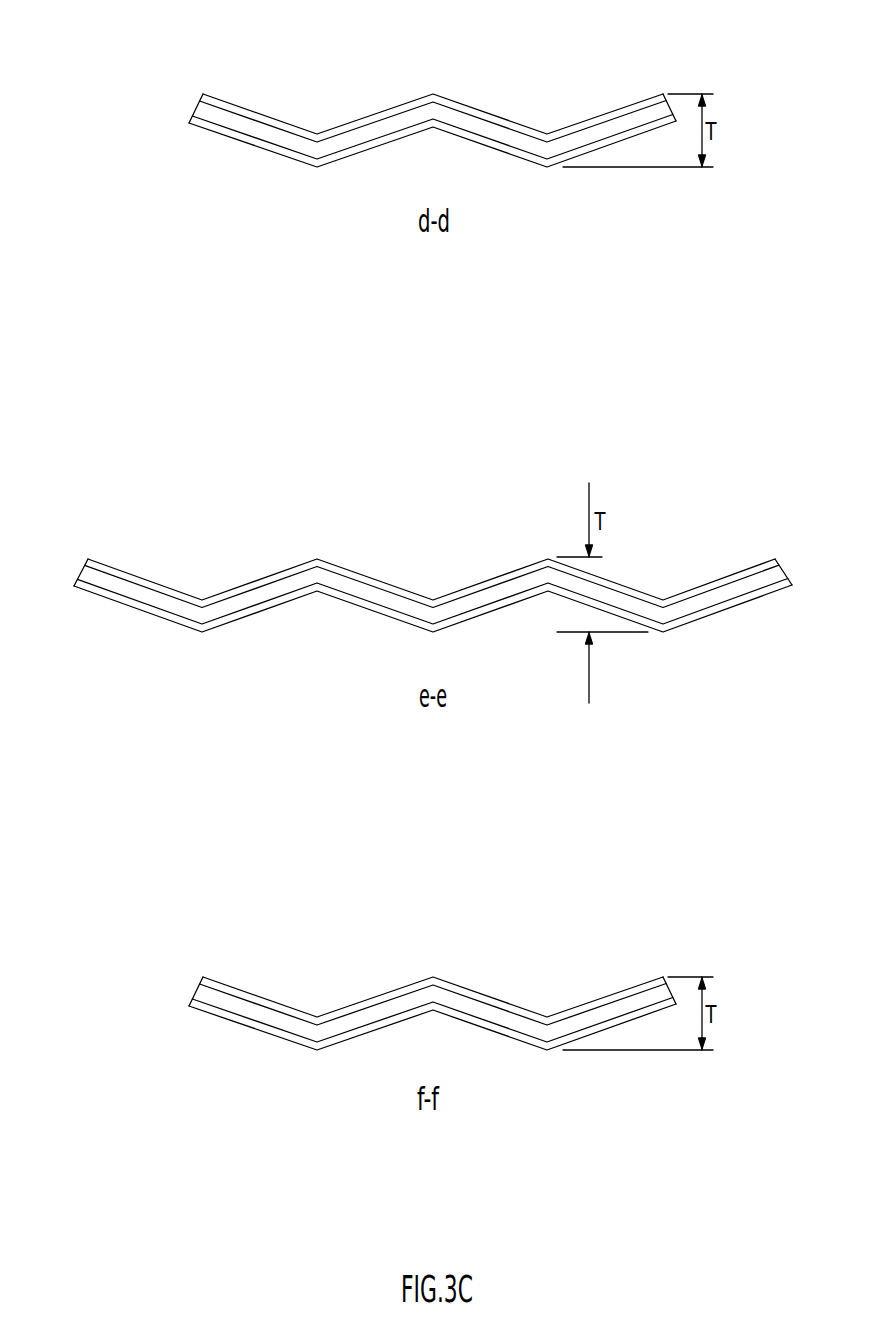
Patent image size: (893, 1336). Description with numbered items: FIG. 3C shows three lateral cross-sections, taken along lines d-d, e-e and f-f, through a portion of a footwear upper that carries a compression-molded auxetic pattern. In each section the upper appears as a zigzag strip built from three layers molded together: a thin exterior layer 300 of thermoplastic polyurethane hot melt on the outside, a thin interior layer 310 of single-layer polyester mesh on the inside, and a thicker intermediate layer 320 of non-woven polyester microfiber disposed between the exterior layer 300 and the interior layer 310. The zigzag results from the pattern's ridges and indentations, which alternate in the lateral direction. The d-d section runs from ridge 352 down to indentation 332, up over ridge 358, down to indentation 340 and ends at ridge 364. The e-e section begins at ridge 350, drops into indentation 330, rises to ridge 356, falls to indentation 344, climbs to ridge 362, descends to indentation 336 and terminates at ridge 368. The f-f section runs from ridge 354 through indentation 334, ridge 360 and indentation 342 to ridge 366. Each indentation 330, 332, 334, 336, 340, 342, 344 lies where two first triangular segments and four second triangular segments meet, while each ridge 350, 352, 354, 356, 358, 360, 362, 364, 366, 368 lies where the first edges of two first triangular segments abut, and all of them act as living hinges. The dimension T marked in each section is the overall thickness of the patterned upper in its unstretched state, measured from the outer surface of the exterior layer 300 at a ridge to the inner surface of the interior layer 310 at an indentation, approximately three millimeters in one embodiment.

The exterior layer 300 is at (407, 567).
The interior layer 310 is at (218, 132).
The intermediate layer 320 is at (200, 112).
The indentation 330 is at (202, 591).
The indentation 332 is at (314, 125).
The indentation 334 is at (314, 1008).
The indentation 336 is at (666, 591).
The indentation 340 is at (545, 124).
The indentation 342 is at (545, 1007).
The indentation 344 is at (431, 591).
The ridge 350 is at (88, 559).
The ridge 352 is at (203, 94).
The ridge 354 is at (203, 977).
The ridge 356 is at (317, 559).
The ridge 358 is at (433, 94).
The ridge 360 is at (433, 977).
The ridge 362 is at (548, 559).
The ridge 364 is at (663, 94).
The ridge 366 is at (663, 977).
The ridge 368 is at (775, 559).